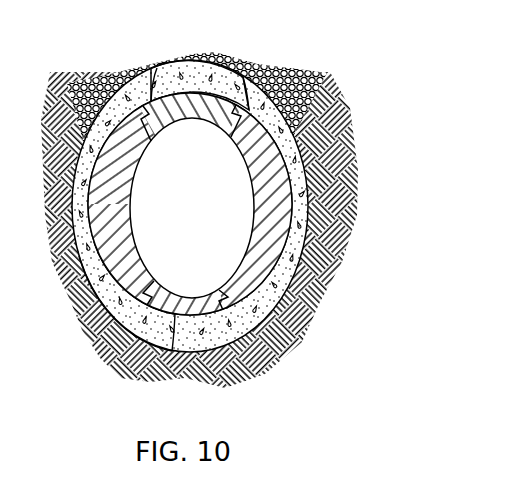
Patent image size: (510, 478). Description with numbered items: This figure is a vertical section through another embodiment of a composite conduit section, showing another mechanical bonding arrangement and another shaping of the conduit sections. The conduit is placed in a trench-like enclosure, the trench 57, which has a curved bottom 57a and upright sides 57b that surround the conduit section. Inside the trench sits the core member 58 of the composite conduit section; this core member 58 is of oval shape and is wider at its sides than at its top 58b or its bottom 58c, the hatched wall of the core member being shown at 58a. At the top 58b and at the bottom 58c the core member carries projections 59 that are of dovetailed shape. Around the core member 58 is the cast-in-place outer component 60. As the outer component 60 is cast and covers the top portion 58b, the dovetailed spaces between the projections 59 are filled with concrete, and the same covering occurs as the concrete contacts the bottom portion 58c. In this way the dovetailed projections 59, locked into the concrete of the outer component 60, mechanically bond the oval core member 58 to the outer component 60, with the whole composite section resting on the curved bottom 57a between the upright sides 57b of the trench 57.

The trench 57 is at (50, 71).
The curved bottom 57a is at (282, 329).
The upright sides 57b is at (86, 273).
The core member 58 is at (305, 163).
The pipe wall 58a is at (288, 207).
The top portion 58b is at (157, 68).
The bottom portion 58c is at (140, 326).
The projections 59 is at (253, 68).
The cast-in-place outer component 60 is at (279, 92).